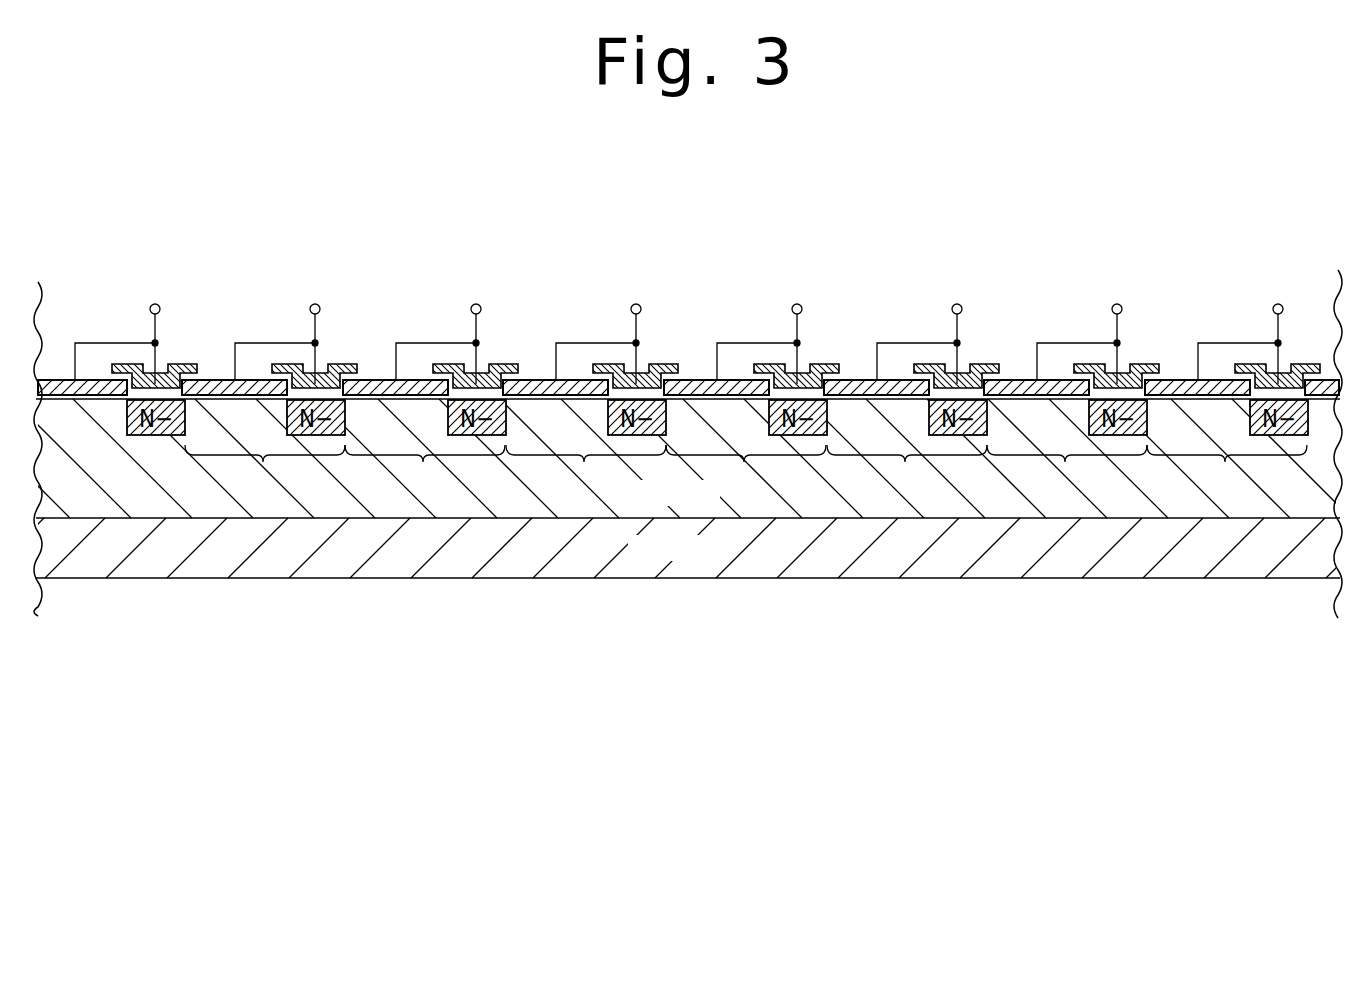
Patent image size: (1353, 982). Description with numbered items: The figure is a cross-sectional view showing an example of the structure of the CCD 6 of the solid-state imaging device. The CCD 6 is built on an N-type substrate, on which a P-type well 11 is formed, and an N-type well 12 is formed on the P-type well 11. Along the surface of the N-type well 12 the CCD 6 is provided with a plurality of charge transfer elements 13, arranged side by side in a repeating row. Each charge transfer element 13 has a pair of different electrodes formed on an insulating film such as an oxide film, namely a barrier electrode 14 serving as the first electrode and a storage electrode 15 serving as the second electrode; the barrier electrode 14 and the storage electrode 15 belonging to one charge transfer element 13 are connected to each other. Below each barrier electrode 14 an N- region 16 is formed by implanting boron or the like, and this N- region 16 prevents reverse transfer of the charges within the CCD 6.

The CCD 6 is at (765, 222).
The P-type well 11 is at (168, 578).
The N-type well 12 is at (338, 518).
The charge transfer element 13 is at (746, 466).
The barrier electrode 14 is at (697, 328).
The storage electrode 15 is at (688, 346).
The N- region 16 is at (685, 421).